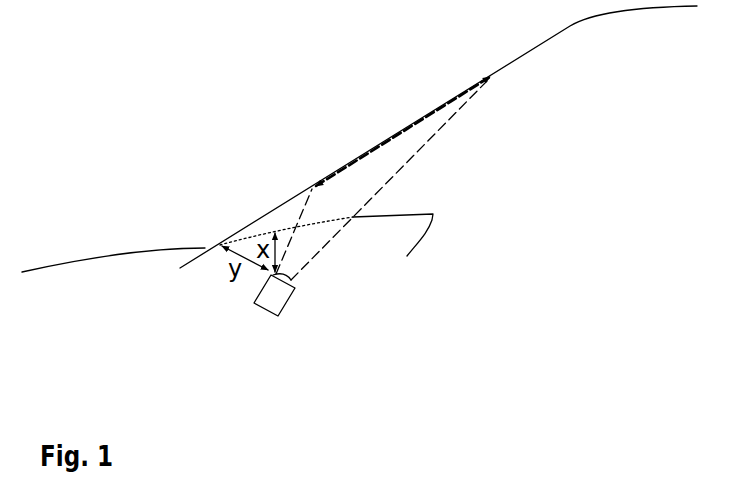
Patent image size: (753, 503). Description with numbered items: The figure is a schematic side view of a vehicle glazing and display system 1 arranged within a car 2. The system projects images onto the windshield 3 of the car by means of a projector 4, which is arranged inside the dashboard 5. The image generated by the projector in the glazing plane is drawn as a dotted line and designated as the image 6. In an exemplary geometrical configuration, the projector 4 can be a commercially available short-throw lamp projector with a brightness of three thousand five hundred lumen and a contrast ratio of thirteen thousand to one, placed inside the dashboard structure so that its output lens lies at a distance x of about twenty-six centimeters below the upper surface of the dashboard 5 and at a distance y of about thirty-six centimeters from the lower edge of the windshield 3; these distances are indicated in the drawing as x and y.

The vehicle glazing and display system 1 is at (416, 170).
The car 2 is at (174, 169).
The windshield 3 is at (497, 71).
The projector 4 is at (254, 303).
The dashboard 5 is at (433, 214).
The image 6 is at (395, 135).